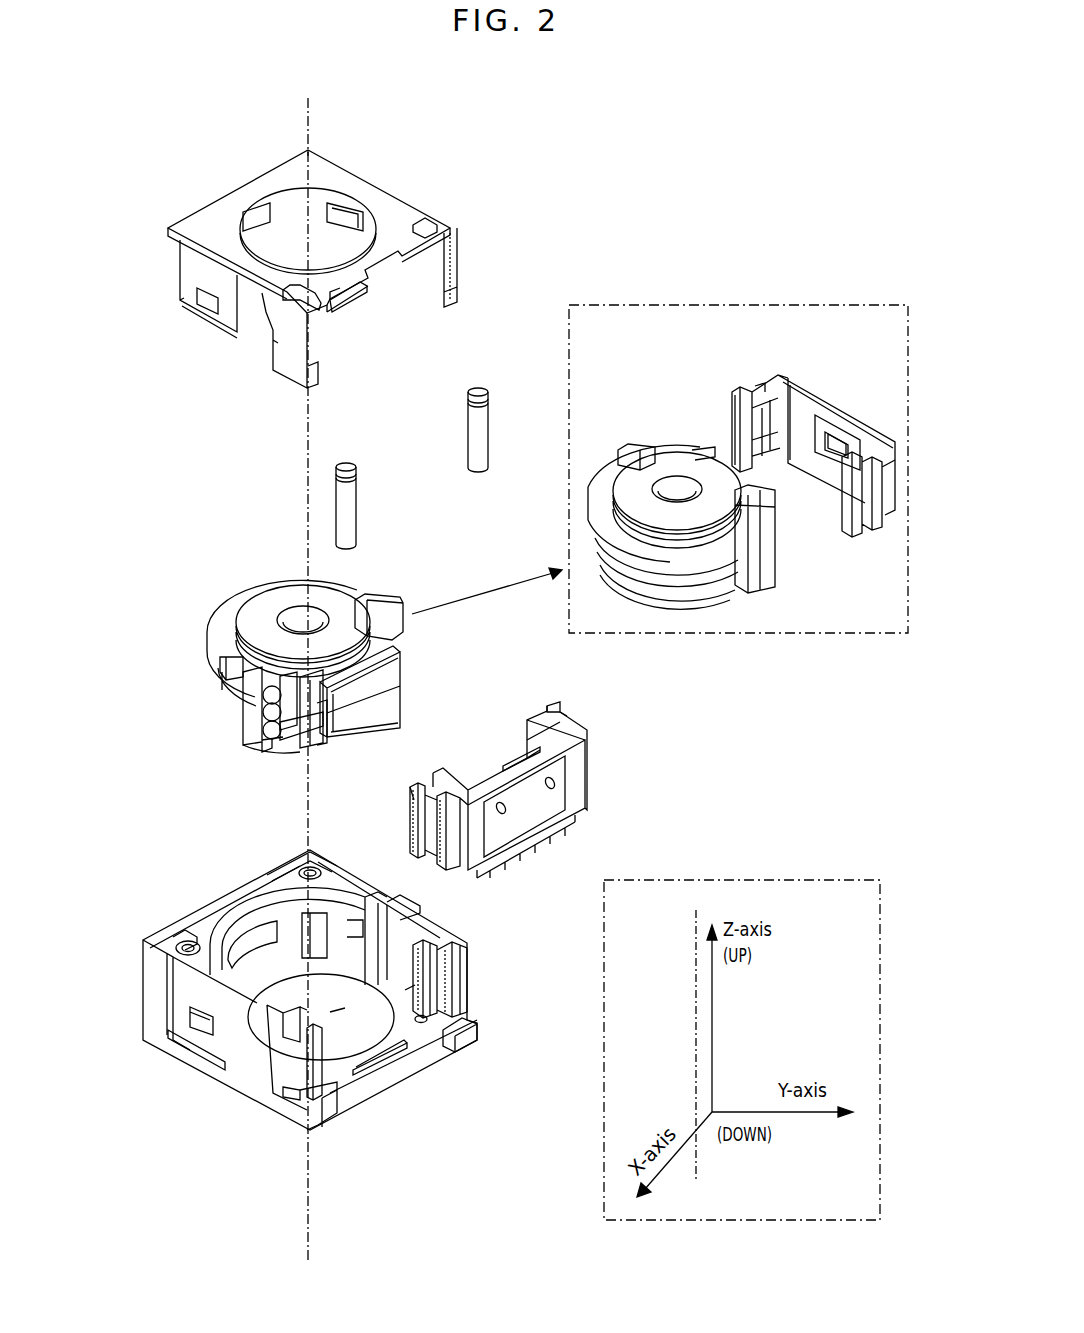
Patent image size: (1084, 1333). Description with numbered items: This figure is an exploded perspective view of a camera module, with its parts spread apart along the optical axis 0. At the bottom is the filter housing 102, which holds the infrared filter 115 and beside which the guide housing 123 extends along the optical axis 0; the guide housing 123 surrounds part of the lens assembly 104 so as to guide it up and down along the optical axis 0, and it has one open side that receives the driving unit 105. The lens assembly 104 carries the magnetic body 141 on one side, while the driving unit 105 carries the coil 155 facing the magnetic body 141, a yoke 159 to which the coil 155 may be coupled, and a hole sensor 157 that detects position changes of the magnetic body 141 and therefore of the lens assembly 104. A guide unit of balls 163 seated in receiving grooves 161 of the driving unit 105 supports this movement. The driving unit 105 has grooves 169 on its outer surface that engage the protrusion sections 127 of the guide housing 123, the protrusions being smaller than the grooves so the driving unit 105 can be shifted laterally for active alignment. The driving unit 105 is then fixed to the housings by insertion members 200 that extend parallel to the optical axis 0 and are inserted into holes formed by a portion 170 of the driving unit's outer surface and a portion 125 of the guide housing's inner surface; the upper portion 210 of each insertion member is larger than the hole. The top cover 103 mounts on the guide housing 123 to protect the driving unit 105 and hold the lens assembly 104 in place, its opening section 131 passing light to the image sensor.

The optical axis 0 is at (312, 132).
The filter housing 102 is at (322, 1023).
The top cover 103 is at (312, 253).
The lens assembly 104 is at (447, 598).
The driving unit 105 is at (626, 610).
The infrared filter 115 is at (340, 1018).
The guide housing 123 is at (205, 998).
The portion of the inner surface of the guide housing 125 is at (438, 998).
The protrusion section 127 is at (403, 995).
The opening section 131 is at (292, 217).
The magnetic body 141 is at (400, 668).
The coil 155 is at (835, 426).
The hole sensor 157 is at (797, 415).
The yoke 159 is at (536, 808).
The receiving groove 161 is at (278, 748).
The ball 163 is at (398, 626).
The groove 169 is at (546, 714).
The portion of the outer surface of the driving unit 170 is at (594, 761).
The insertion member 200 is at (358, 540).
The upper portion of the insertion member 210 is at (490, 392).